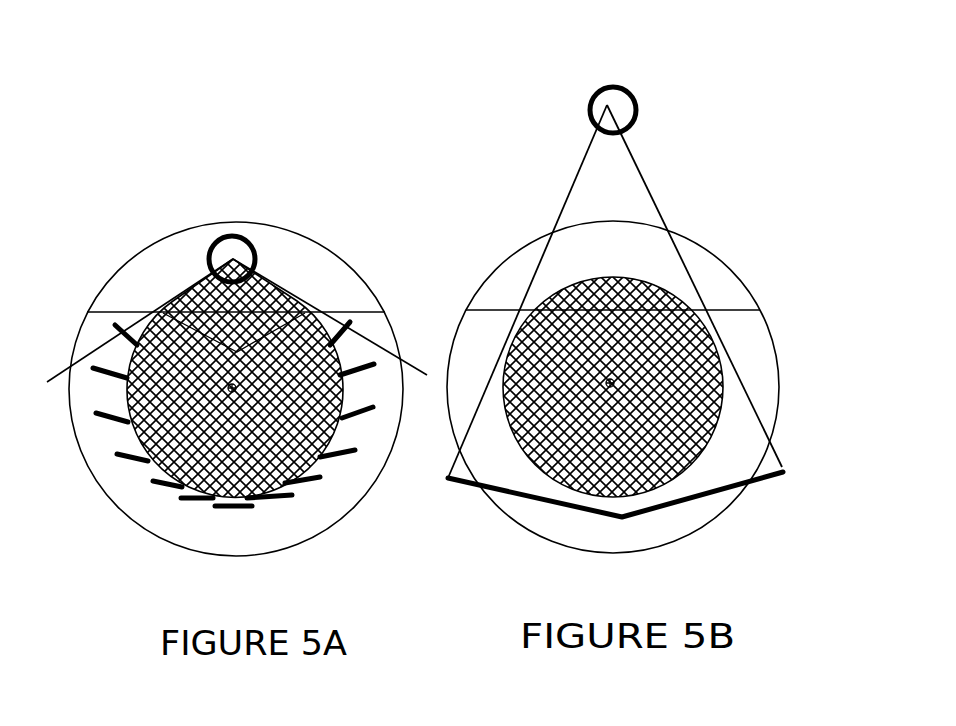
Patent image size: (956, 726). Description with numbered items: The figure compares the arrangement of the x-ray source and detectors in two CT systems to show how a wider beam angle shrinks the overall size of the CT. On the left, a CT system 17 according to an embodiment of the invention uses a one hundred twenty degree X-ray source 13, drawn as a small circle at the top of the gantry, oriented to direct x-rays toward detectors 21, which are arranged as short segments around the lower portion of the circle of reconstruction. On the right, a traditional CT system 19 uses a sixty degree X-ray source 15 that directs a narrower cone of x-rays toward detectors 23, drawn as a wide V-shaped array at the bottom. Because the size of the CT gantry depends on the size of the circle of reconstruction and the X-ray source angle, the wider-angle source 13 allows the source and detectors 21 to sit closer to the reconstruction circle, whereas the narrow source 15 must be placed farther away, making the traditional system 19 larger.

In FIG. 5A, the X-ray source 13 is at (275, 199).
In FIG. 5B, the X-ray source 15 is at (659, 72).
In FIG. 5A, the CT system 17 is at (128, 195).
In FIG. 5B, the traditional CT system 19 is at (762, 208).
In FIG. 5A, the detectors 21 is at (203, 434).
In FIG. 5B, the detectors 23 is at (785, 478).